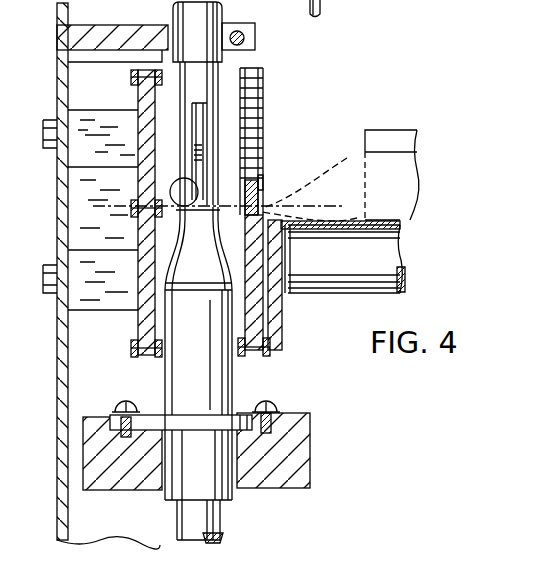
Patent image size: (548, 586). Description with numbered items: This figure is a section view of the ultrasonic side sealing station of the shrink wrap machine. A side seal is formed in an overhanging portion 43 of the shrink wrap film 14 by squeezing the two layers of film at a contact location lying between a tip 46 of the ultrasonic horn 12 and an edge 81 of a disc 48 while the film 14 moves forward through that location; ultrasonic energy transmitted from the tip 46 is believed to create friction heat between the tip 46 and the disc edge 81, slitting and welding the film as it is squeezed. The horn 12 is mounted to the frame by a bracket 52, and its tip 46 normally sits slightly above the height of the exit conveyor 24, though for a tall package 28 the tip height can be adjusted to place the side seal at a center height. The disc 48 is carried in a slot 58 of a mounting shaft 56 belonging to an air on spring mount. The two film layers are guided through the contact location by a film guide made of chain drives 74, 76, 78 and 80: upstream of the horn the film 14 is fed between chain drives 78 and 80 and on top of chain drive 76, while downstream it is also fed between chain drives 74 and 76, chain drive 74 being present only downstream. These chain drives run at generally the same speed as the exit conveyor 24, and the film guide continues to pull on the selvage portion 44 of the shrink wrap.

The ultrasonic horn 12 is at (220, 398).
The shrink wrap film 14 is at (340, 170).
The exit conveyor 24 is at (373, 263).
The tall package 28 is at (387, 183).
The overhanging portion 43 is at (248, 213).
The selvage portion 44 is at (120, 207).
The tip 46 is at (258, 205).
The disc 48 is at (178, 185).
The bracket 52 is at (298, 443).
The mounting shaft 56 is at (205, 88).
The slot 58 is at (198, 128).
The chain drive 74 is at (265, 136).
The chain drive 76 is at (250, 318).
The chain drive 78 is at (136, 143).
The chain drive 80 is at (148, 313).
The edge 81 is at (258, 178).